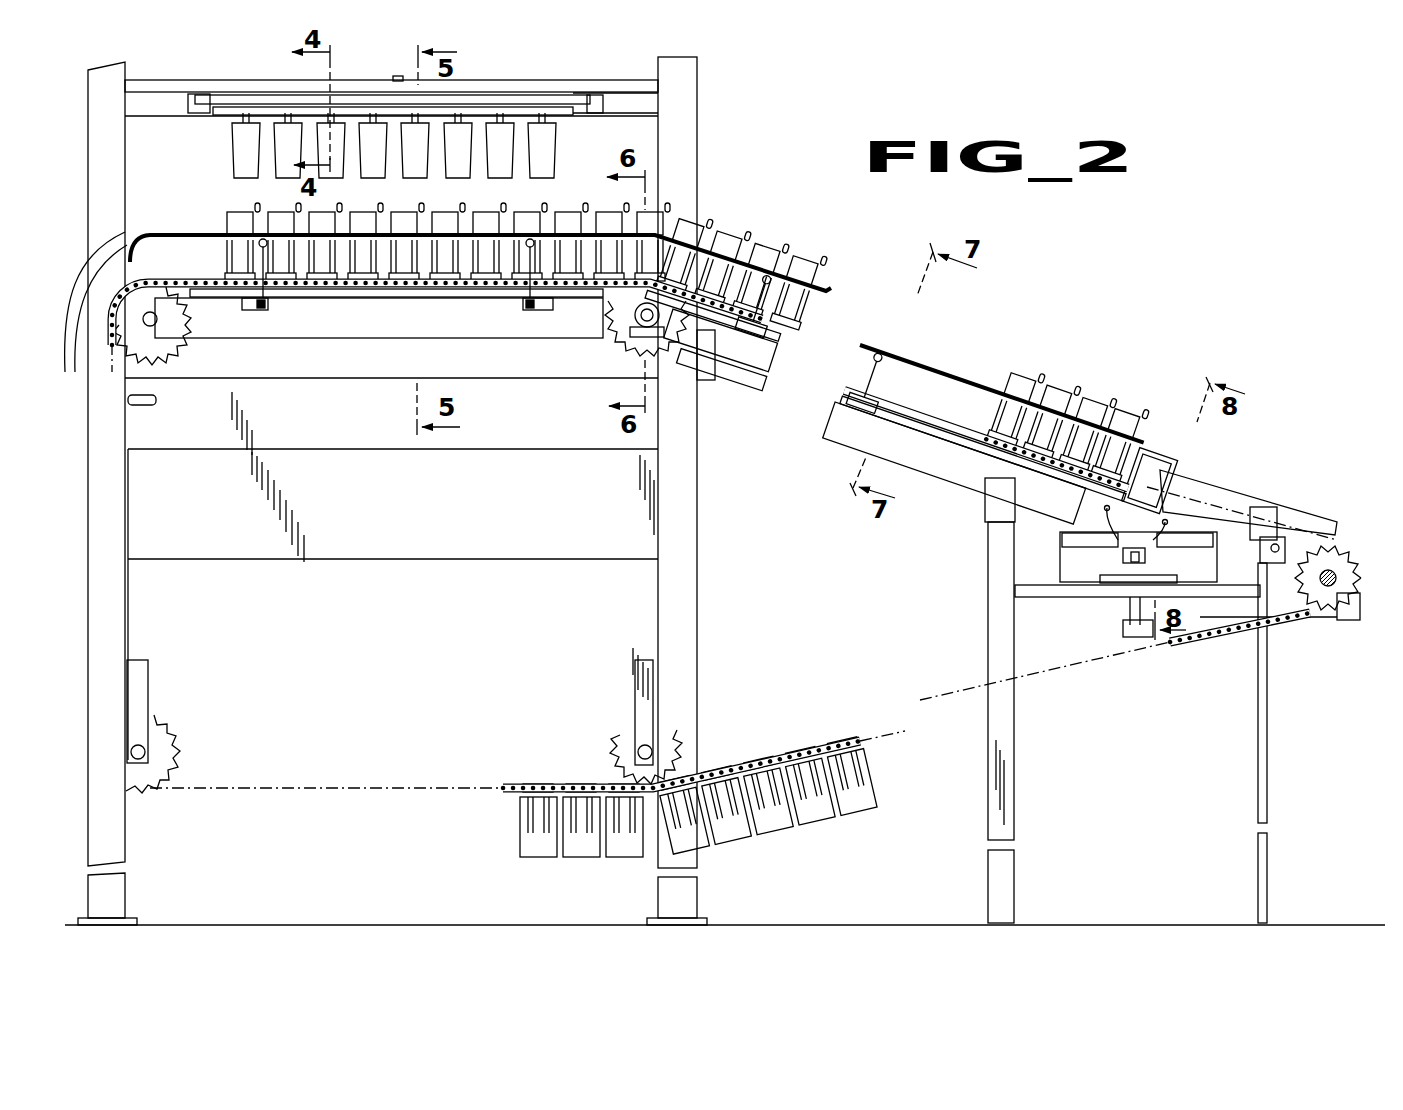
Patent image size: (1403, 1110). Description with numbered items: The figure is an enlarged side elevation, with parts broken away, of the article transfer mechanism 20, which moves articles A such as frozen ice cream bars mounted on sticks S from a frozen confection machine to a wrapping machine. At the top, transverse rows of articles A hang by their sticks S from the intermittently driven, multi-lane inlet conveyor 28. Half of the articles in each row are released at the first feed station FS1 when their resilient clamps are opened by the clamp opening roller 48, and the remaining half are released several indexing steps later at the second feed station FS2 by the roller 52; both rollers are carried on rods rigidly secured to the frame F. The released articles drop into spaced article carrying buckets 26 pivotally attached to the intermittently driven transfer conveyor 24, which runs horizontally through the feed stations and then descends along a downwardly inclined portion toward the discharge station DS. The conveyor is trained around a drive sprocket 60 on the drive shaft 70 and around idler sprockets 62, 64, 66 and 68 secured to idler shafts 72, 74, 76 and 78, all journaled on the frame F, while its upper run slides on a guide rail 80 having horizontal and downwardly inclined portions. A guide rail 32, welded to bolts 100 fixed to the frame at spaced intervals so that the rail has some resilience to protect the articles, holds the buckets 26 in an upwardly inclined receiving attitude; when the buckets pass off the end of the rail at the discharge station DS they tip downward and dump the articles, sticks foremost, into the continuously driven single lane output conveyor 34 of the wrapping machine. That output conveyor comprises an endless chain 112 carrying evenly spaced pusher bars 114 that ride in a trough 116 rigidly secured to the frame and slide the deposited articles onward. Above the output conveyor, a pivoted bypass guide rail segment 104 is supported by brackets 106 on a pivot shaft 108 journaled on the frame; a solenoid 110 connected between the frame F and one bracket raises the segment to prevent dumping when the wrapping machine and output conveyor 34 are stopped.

The feed station FS2 is at (178, 86).
The feed station FS1 is at (497, 80).
The roller 52 is at (193, 92).
The inlet conveyor 28 is at (540, 102).
The clamp opening roller 48 is at (612, 88).
The article A is at (232, 148).
The stick S is at (520, 118).
The article transfer mechanism 20 is at (722, 212).
The article carrying bucket 26 is at (462, 212).
The guide rail 32 is at (143, 234).
The transfer conveyor 24 is at (197, 278).
The idler shaft 74 is at (148, 311).
The idler sprocket 64 is at (182, 320).
The bolt 100 is at (268, 300).
The guide rail 80 is at (388, 296).
The idler sprocket 62 is at (607, 313).
The idler shaft 72 is at (645, 324).
The discharge station DS is at (1188, 452).
The bypass guide rail segment 104 is at (1296, 508).
The pusher bar 114 is at (1126, 535).
The trough 116 is at (1062, 541).
The output conveyor 34 is at (1120, 557).
The endless chain 112 is at (1148, 558).
The bracket 106 is at (1262, 526).
The pivot shaft 108 is at (1262, 546).
The drive shaft 70 is at (1340, 568).
The drive sprocket 60 is at (1340, 598).
The solenoid 110 is at (1253, 612).
The frame F is at (690, 574).
The idler shaft 76 is at (148, 752).
The idler sprocket 66 is at (178, 749).
The idler shaft 78 is at (640, 751).
The idler sprocket 68 is at (626, 758).